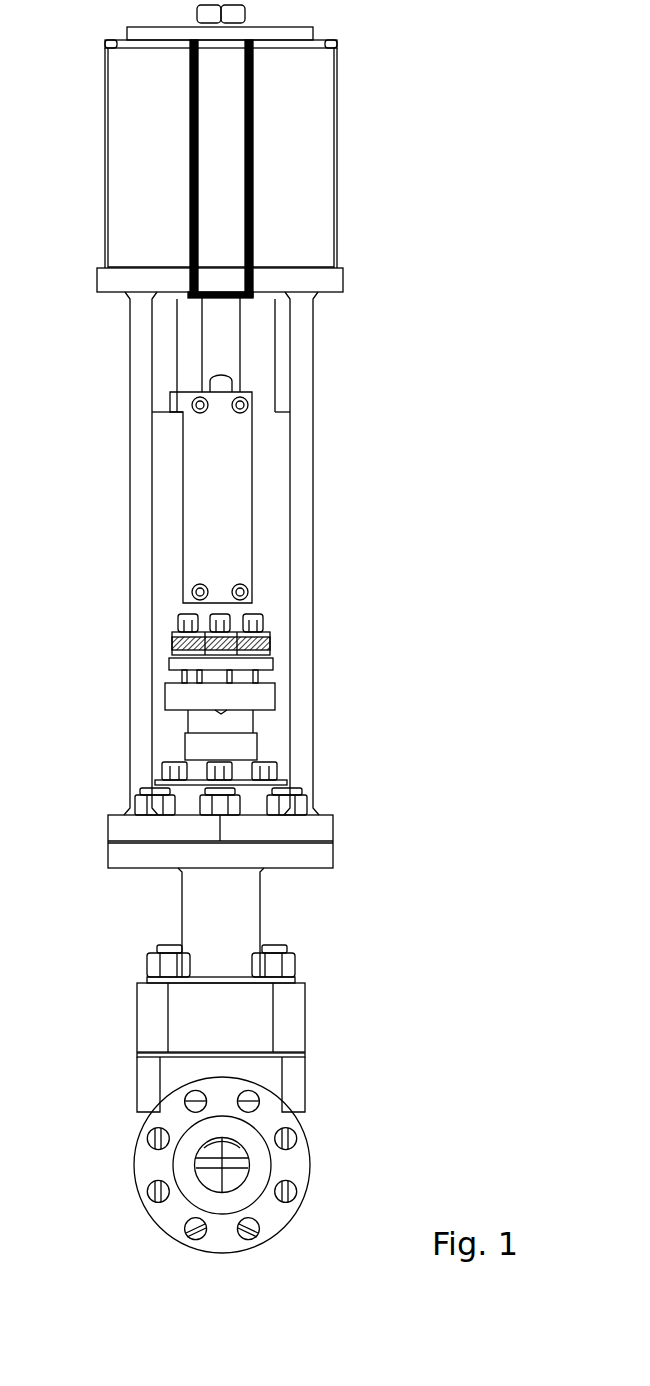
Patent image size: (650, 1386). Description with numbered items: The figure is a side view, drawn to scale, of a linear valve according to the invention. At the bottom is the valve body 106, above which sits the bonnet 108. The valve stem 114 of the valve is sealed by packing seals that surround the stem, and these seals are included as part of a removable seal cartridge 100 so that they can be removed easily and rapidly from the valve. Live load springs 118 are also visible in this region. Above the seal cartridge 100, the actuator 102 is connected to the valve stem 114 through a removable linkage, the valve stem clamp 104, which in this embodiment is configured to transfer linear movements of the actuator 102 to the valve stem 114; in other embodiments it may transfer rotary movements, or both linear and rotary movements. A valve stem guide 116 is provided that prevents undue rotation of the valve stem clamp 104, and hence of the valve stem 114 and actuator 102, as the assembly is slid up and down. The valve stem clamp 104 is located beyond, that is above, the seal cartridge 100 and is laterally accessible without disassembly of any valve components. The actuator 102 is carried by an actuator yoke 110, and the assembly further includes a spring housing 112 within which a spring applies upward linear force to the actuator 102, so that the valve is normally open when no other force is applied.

The seal cartridge 100 is at (355, 628).
The actuator 102 is at (240, 340).
The valve stem clamp 104 is at (237, 511).
The valve body 106 is at (305, 1073).
The bonnet 108 is at (262, 918).
The actuator yoke 110 is at (130, 700).
The spring housing 112 is at (337, 153).
The valve stem 114 is at (232, 609).
The valve stem guide 116 is at (165, 340).
The live load springs 118 is at (172, 643).